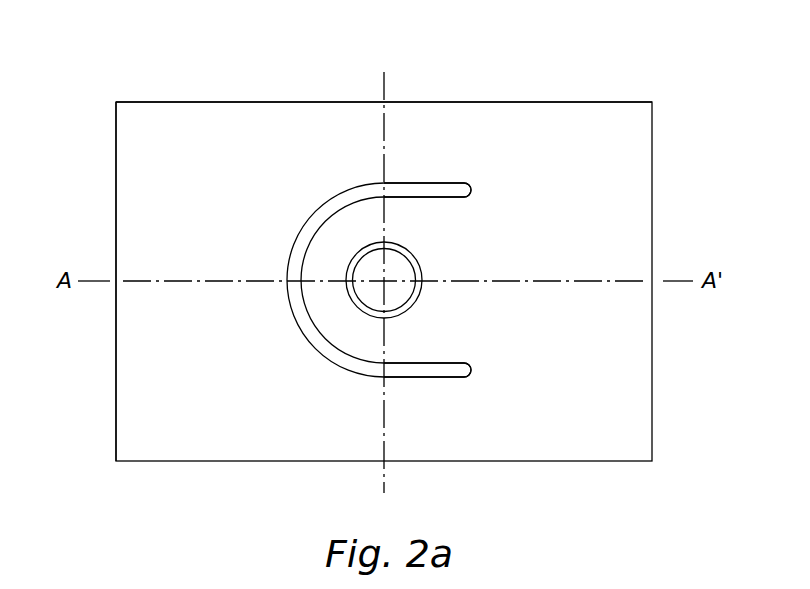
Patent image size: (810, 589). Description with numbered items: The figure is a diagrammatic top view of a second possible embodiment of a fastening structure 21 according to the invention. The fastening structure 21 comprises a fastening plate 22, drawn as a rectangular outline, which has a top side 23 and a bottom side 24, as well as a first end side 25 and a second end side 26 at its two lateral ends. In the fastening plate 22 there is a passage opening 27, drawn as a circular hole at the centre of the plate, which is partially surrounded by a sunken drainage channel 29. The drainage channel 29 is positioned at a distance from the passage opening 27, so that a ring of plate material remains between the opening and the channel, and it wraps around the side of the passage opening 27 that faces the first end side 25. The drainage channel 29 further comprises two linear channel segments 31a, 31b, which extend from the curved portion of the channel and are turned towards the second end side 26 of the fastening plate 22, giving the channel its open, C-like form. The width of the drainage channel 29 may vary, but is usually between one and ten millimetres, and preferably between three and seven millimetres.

The fastening structure 21 is at (687, 75).
The fastening plate 22 is at (172, 91).
The top side 23 is at (262, 145).
The bottom side 24 is at (108, 185).
The first end side 25 is at (108, 368).
The second end side 26 is at (660, 368).
The passage opening 27 is at (395, 268).
The drainage channel 29 is at (298, 313).
The linear channel segment 31a is at (433, 191).
The linear channel segment 31b is at (433, 372).